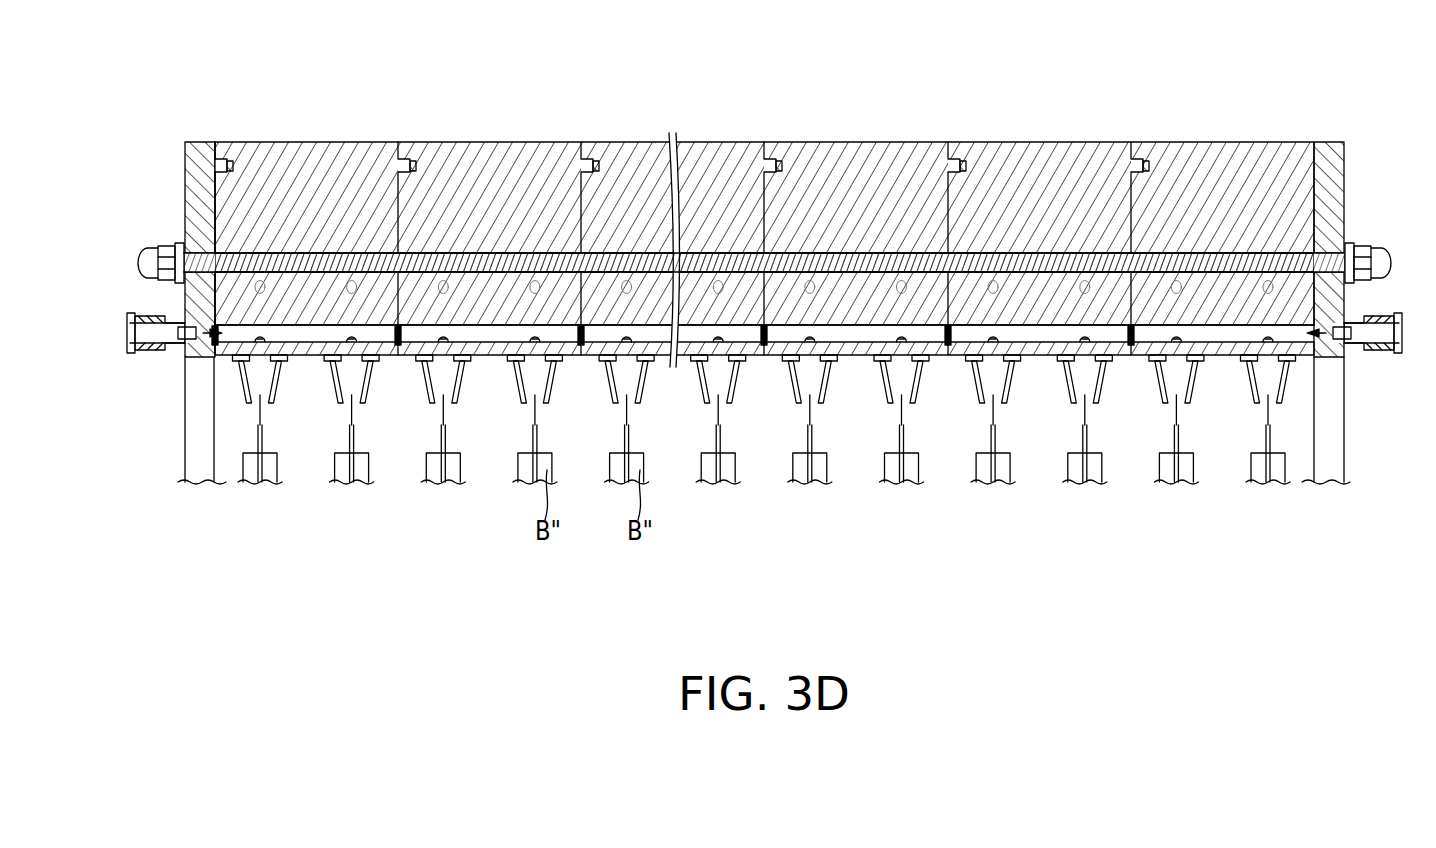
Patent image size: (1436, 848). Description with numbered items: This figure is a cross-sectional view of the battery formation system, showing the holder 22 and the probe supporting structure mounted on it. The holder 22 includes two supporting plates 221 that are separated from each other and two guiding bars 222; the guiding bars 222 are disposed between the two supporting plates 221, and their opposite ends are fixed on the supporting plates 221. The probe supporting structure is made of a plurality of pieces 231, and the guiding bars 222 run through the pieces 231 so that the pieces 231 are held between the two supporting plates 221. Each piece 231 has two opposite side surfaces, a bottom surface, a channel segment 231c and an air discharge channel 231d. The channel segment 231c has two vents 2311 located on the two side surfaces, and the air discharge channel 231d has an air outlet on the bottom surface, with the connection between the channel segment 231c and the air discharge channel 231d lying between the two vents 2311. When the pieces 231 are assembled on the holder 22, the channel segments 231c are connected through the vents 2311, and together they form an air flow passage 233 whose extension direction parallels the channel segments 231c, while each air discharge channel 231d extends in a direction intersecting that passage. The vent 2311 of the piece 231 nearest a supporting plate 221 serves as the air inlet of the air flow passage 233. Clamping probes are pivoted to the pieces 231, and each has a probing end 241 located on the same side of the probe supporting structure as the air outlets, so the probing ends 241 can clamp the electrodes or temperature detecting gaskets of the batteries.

The holder 22 is at (734, 263).
The supporting plate 221 is at (192, 202).
The guiding bar 222 is at (138, 262).
The piece 231 is at (271, 178).
The channel segment 231c is at (623, 588).
The air discharge channel 231d is at (444, 335).
The air flow passage 233 is at (764, 481).
The probing end 241 is at (643, 383).
The vent 2311 is at (186, 348).